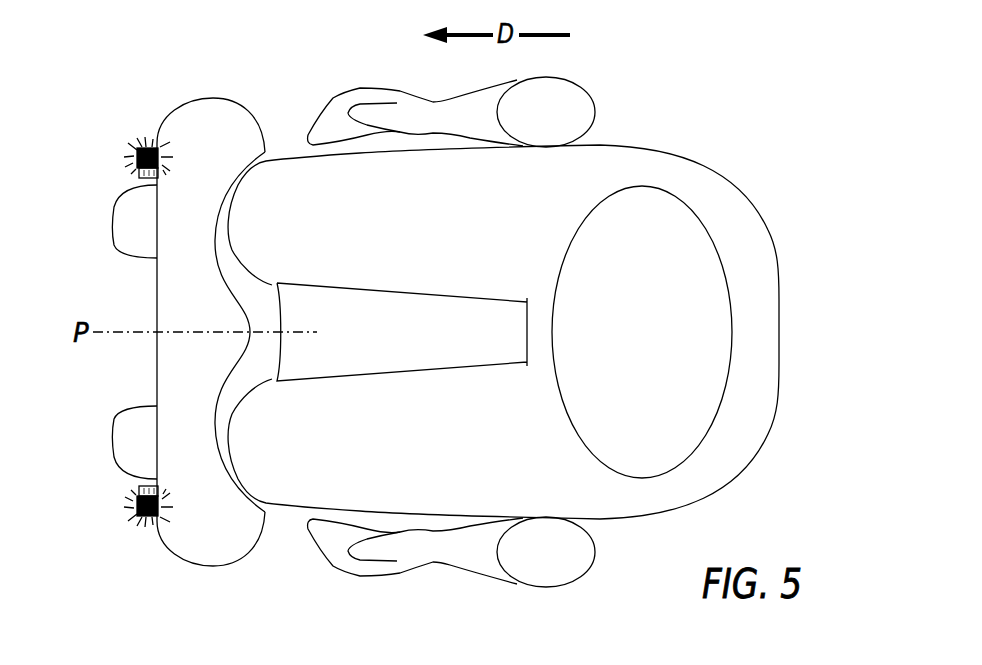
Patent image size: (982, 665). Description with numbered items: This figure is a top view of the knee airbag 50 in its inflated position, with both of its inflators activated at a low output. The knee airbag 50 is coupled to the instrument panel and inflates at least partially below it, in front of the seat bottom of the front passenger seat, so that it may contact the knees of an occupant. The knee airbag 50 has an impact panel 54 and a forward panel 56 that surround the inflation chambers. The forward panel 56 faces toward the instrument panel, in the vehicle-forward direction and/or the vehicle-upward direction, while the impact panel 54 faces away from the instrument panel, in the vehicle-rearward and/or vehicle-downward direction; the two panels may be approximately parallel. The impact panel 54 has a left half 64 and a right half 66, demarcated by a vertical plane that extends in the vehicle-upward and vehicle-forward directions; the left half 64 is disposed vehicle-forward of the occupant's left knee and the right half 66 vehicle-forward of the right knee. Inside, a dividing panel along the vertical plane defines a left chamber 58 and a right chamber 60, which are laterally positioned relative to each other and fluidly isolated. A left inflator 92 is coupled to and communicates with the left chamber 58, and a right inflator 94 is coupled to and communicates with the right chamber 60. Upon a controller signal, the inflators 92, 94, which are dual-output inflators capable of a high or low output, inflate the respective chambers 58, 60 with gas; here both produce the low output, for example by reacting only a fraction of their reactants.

The knee airbag 50 is at (191, 333).
The impact panel 54 is at (280, 304).
The forward panel 56 is at (156, 303).
The left chamber 58 is at (230, 542).
The right chamber 60 is at (232, 120).
The left half 64 is at (265, 503).
The right half 66 is at (265, 133).
The left inflator 92 is at (135, 500).
The right inflator 94 is at (135, 155).